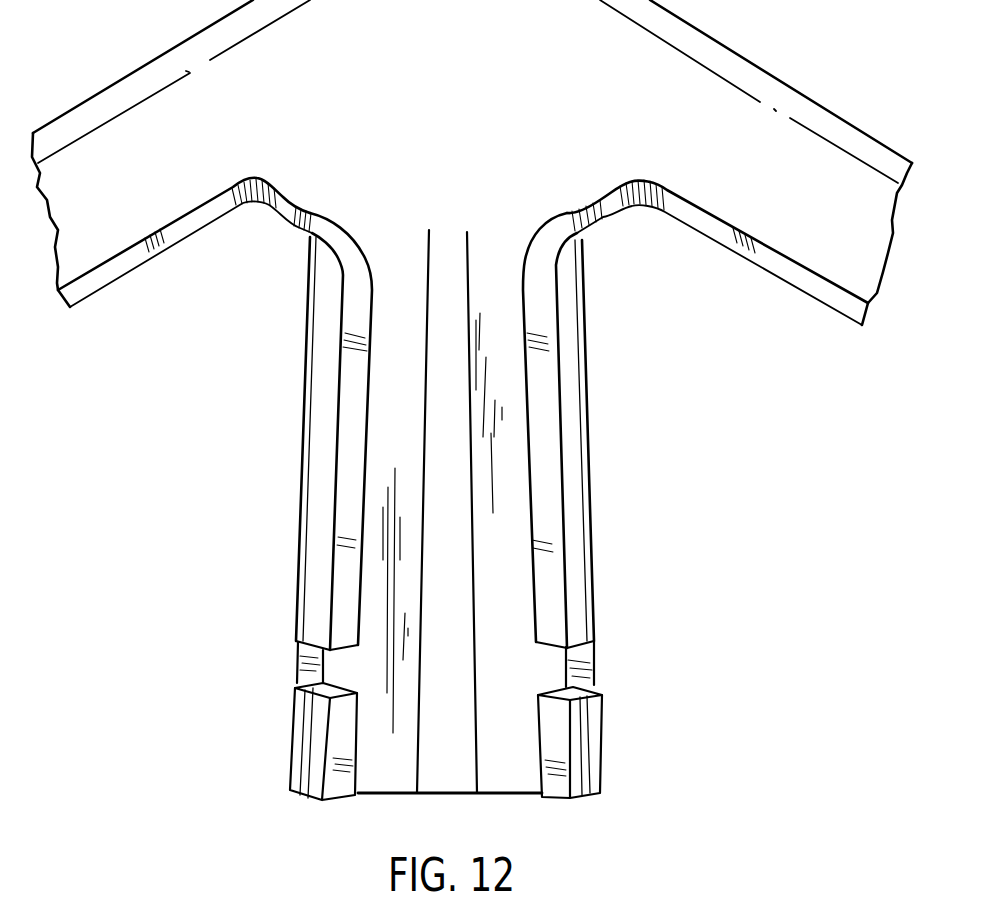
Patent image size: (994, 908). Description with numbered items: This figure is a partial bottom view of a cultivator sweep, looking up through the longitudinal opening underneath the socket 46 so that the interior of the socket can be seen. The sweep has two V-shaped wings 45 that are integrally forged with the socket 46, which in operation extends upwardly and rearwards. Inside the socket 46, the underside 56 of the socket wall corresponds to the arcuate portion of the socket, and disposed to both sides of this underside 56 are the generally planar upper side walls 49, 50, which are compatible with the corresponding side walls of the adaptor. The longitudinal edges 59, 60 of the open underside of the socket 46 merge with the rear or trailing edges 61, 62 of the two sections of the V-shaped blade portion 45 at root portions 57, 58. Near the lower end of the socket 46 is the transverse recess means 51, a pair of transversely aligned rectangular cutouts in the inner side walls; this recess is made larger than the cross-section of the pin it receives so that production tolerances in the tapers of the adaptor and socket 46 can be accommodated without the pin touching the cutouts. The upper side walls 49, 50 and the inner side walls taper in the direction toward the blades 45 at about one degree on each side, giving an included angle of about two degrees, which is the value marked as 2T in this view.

The V-shaped wings 45 is at (131, 174).
The socket 46 is at (471, 522).
The upper side wall 49 is at (402, 447).
The upper side wall 50 is at (495, 460).
The transverse recess means 51 is at (305, 672).
The underside of the socket wall 56 is at (445, 643).
The root portion 57 is at (285, 212).
The root portion 58 is at (610, 210).
The longitudinal edge 59 is at (355, 282).
The longitudinal edge 60 is at (543, 277).
The trailing edge 61 is at (112, 273).
The trailing edge 62 is at (833, 302).
The included angle of the taper 2T is at (418, 762).